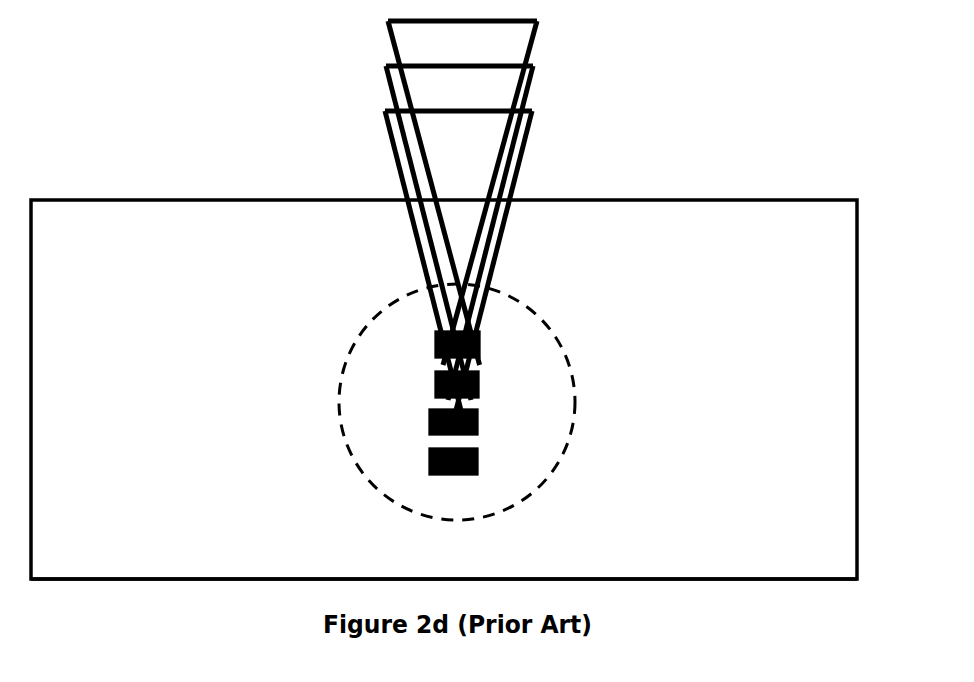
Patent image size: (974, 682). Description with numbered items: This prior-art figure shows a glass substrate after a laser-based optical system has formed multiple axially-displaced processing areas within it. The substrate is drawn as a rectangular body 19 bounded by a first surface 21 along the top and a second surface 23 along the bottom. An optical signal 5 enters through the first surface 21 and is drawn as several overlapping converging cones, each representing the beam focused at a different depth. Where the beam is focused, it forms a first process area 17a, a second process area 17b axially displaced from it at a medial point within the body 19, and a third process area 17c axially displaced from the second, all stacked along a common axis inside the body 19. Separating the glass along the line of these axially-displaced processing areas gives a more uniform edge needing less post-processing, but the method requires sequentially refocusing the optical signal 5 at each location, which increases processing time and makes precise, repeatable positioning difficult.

The optical signal 5 is at (528, 125).
The first process area 17a is at (474, 334).
The second process area 17b is at (476, 374).
The third process area 17c is at (462, 425).
The body 19 is at (572, 433).
The first surface 21 is at (345, 200).
The second surface 23 is at (817, 573).